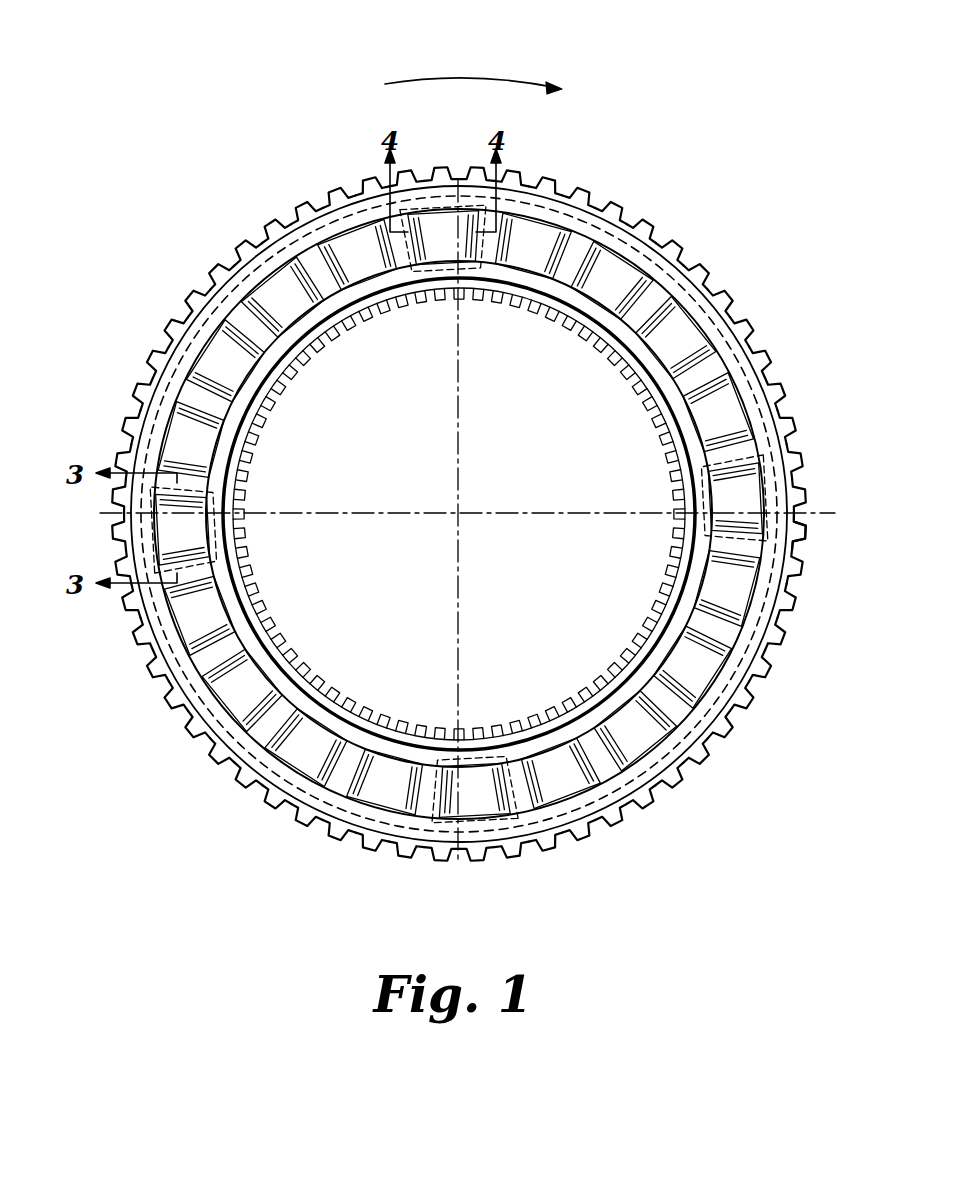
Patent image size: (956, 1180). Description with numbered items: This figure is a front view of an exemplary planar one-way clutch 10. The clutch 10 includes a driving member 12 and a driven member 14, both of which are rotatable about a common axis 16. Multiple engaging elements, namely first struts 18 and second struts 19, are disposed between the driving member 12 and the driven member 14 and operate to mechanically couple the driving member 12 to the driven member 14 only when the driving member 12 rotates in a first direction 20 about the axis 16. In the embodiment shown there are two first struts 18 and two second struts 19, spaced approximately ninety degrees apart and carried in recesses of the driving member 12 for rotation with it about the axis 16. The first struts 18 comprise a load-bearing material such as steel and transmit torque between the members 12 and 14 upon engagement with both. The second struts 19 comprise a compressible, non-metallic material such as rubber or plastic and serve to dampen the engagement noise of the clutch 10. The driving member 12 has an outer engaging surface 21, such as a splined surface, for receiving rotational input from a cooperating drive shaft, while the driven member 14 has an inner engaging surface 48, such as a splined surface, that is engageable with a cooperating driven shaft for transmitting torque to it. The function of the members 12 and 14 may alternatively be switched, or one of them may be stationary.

The clutch 10 is at (635, 170).
The driving member 12 is at (758, 312).
The driven member 14 is at (560, 334).
The common axis 16 is at (453, 511).
The first struts 18 is at (805, 488).
The second struts 19 is at (460, 173).
The first direction 20 is at (428, 80).
The outer engaging surface 21 is at (810, 535).
The inner engaging surface 48 is at (632, 378).